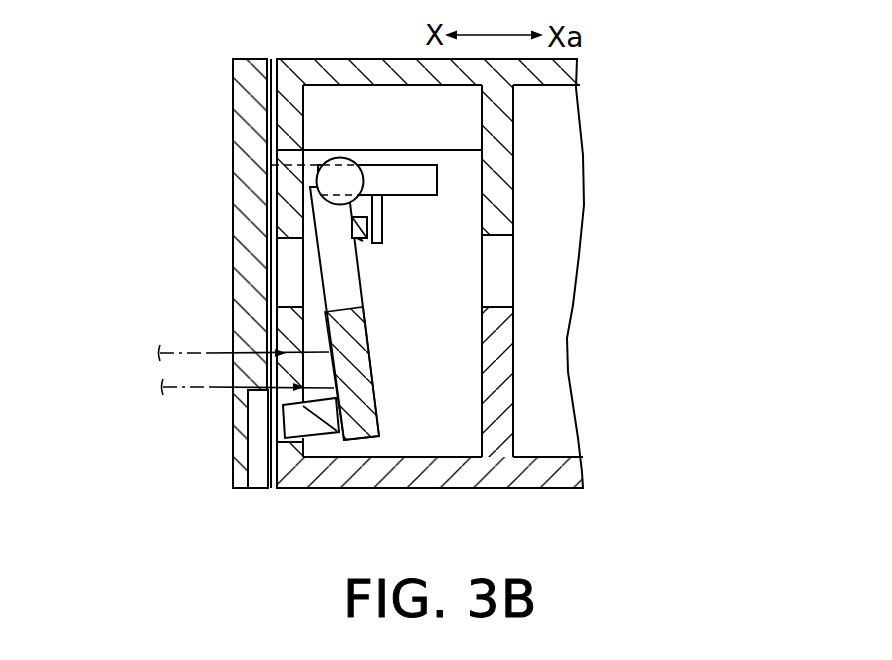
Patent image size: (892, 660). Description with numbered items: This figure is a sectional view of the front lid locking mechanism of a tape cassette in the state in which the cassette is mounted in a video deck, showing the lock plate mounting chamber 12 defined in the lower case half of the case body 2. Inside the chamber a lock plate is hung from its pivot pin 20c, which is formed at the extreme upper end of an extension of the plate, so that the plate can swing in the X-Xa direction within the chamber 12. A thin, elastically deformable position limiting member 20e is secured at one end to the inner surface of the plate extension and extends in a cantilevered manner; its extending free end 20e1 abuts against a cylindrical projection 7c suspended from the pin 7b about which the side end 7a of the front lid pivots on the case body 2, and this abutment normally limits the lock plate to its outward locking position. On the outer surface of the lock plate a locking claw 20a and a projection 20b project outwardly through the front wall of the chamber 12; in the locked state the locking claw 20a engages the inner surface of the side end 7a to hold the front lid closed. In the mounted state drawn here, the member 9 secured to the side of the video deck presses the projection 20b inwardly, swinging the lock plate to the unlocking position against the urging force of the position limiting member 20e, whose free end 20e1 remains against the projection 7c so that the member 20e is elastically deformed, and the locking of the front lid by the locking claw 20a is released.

The case body 2 is at (605, 237).
The side end 7a is at (233, 140).
The pin 7b is at (437, 174).
The cylindrical projection 7c is at (383, 222).
The member 9 is at (213, 388).
The lock plate mounting chamber 12 is at (444, 446).
The locking claw 20a is at (320, 435).
The projection 20b is at (295, 386).
The pivot pin 20c is at (340, 158).
The position limiting member 20e is at (366, 237).
The extending free end 20e1 is at (357, 238).